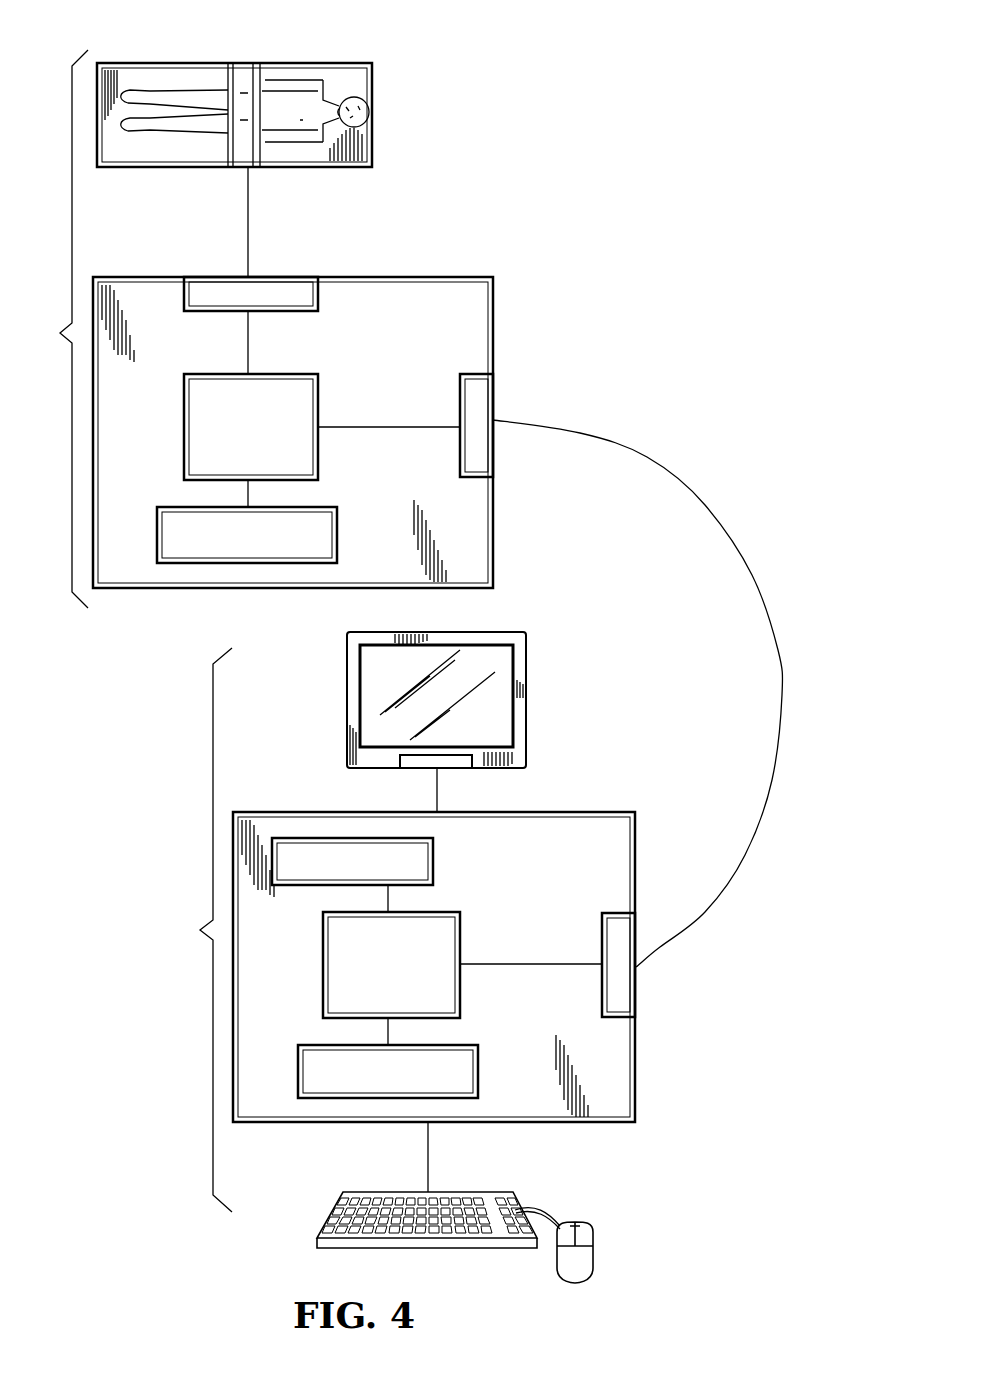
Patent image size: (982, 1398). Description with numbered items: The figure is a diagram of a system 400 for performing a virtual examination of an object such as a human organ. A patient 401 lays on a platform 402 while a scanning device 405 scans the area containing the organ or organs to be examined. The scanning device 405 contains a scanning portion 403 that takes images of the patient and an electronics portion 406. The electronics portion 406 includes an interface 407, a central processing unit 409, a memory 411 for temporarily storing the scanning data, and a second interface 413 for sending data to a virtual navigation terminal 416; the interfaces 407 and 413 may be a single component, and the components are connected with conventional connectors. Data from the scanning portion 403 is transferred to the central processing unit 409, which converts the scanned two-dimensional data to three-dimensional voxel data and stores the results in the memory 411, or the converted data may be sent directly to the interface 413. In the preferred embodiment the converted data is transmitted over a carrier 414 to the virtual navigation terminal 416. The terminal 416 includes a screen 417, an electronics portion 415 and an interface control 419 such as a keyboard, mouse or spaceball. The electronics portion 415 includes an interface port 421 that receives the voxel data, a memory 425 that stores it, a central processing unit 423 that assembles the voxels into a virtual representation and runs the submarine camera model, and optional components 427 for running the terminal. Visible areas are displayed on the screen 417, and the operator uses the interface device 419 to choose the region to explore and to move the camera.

The system 400 is at (543, 205).
The patient 401 is at (358, 90).
The platform 402 is at (372, 142).
The scanning portion 403 is at (246, 66).
The scanning device 405 is at (49, 329).
The electronics portion 406 is at (388, 277).
The interface 407 is at (214, 290).
The central processing unit 409 is at (320, 386).
The memory 411 is at (337, 535).
The second interface 413 is at (478, 398).
The carrier 414 is at (627, 445).
The electronics portion 415 is at (572, 812).
The virtual navigation terminal 416 is at (193, 930).
The screen 417 is at (527, 660).
The interface control 419 is at (585, 1224).
The interface port 421 is at (640, 992).
The central processing unit 423 is at (462, 928).
The memory 425 is at (478, 1083).
The optional components 427 is at (310, 838).